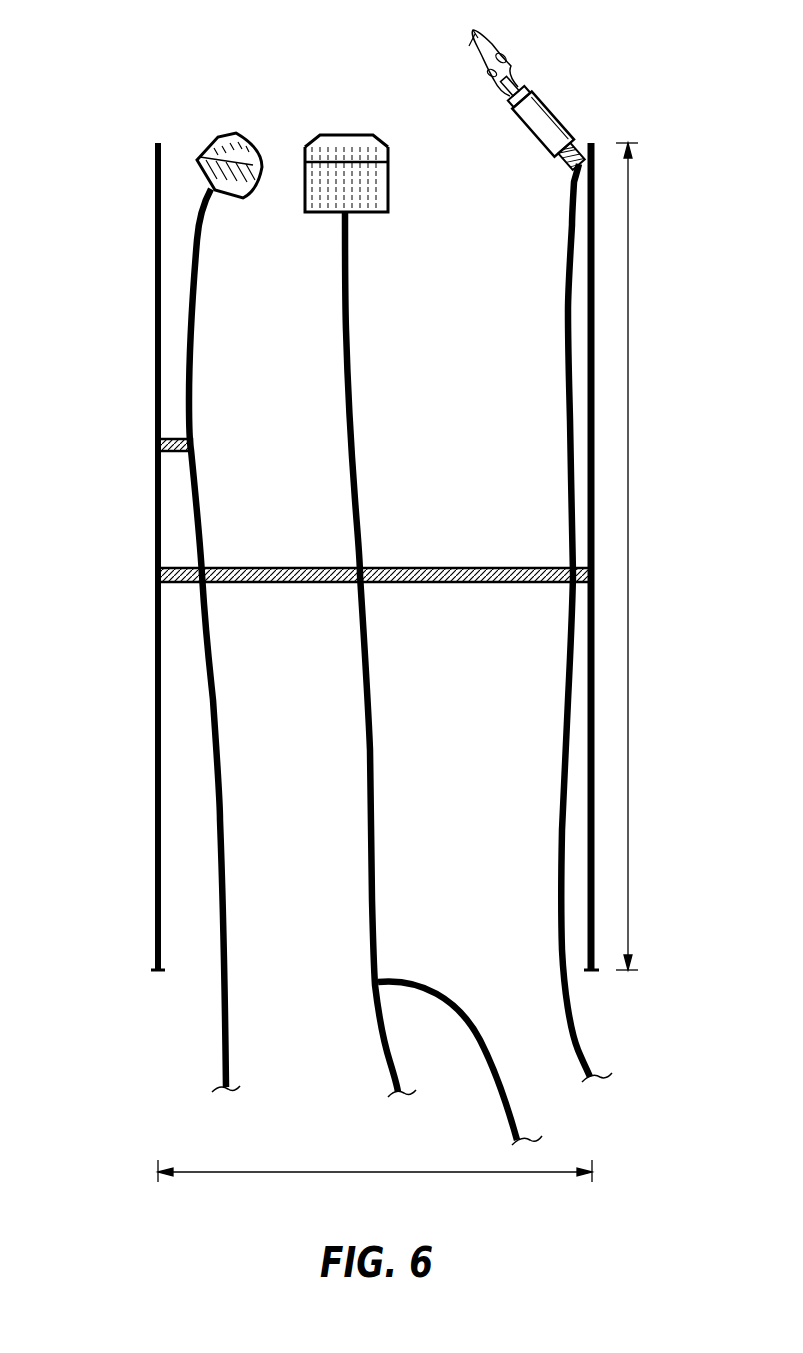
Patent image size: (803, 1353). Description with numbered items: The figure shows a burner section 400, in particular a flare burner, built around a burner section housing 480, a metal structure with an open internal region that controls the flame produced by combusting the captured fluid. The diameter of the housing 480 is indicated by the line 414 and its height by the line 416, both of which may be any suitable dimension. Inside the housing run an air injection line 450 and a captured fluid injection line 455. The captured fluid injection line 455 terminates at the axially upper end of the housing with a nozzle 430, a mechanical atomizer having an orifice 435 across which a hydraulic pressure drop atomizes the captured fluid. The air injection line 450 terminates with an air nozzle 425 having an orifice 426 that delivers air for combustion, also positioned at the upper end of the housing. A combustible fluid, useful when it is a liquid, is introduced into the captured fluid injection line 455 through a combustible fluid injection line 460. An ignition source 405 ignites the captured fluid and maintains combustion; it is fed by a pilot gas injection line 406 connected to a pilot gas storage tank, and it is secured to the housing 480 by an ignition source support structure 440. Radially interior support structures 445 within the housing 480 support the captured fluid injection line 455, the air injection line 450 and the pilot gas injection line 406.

The burner section 400 is at (86, 151).
The ignition source 405 is at (539, 130).
The pilot gas injection line 406 is at (562, 797).
The diameter line 414 is at (332, 1172).
The height line 416 is at (634, 515).
The air nozzle 425 is at (210, 153).
The orifice 426 is at (250, 150).
The nozzle 430 is at (380, 178).
The orifice 435 is at (345, 135).
The ignition source support structure 440 is at (578, 139).
The radially interior support structures 445 is at (171, 439).
The air injection line 450 is at (220, 793).
The captured fluid injection line 455 is at (372, 793).
The combustible fluid injection line 460 is at (448, 1003).
The burner section housing 480 is at (156, 665).